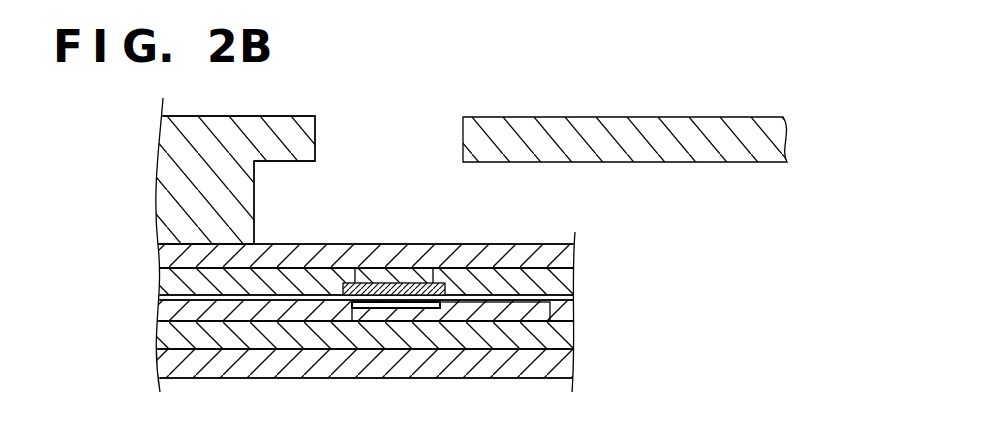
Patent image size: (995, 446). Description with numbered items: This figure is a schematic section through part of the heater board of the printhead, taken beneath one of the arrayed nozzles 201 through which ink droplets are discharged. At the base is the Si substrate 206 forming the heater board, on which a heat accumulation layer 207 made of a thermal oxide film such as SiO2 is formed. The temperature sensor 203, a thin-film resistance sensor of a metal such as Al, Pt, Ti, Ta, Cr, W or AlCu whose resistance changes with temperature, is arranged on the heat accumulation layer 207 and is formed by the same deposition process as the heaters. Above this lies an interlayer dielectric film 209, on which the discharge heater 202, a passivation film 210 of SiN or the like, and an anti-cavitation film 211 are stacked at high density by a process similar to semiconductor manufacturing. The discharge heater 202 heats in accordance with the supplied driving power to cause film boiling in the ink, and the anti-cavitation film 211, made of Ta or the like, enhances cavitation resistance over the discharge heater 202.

The nozzle 201 is at (360, 195).
The discharge heater 202 is at (415, 288).
The temperature sensor 203 is at (413, 308).
The Si substrate 206 is at (566, 363).
The heat accumulation layer 207 is at (566, 334).
The interlayer dielectric film 209 is at (182, 296).
The passivation film 210 is at (566, 281).
The anti-cavitation film 211 is at (566, 253).